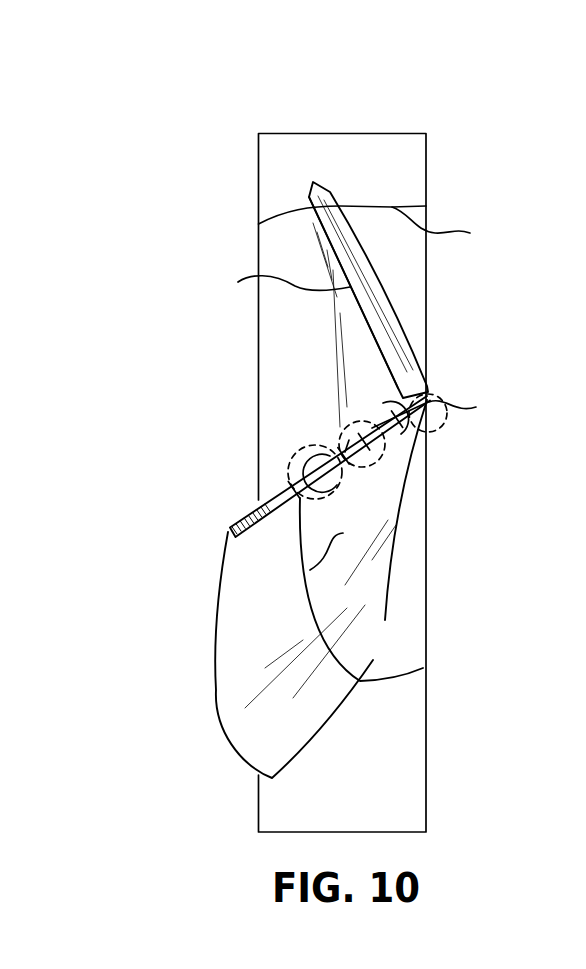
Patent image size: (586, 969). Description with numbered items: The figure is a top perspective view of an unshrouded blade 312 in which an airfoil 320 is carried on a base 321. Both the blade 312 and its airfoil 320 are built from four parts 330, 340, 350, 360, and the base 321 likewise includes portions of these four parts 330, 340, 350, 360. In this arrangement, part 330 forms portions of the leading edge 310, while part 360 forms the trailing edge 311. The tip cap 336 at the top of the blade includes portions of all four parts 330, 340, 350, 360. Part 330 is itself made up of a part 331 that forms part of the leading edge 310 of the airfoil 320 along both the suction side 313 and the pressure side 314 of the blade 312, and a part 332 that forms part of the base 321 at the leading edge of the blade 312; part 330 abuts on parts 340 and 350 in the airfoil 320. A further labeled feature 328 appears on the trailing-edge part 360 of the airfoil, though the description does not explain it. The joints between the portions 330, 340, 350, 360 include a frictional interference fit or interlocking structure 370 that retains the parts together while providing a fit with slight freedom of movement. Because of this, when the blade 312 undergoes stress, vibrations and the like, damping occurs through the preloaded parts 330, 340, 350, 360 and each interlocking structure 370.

The unshrouded blade 312 is at (322, 429).
The trailing edge 311 is at (347, 246).
The base 321 is at (427, 163).
The part 360 is at (400, 182).
The part 350 is at (321, 397).
The part 340 is at (403, 654).
The part 330 is at (374, 802).
The part 332 is at (398, 792).
The tip cap 336 is at (385, 320).
The plate edge 328 is at (390, 358).
The pressure side 314 is at (318, 338).
The frictional interference fit or interlocking structure 370 is at (345, 447).
The airfoil 320 is at (309, 508).
The leading edge 310 is at (319, 589).
The suction side 313 is at (392, 594).
The part 331 is at (253, 672).